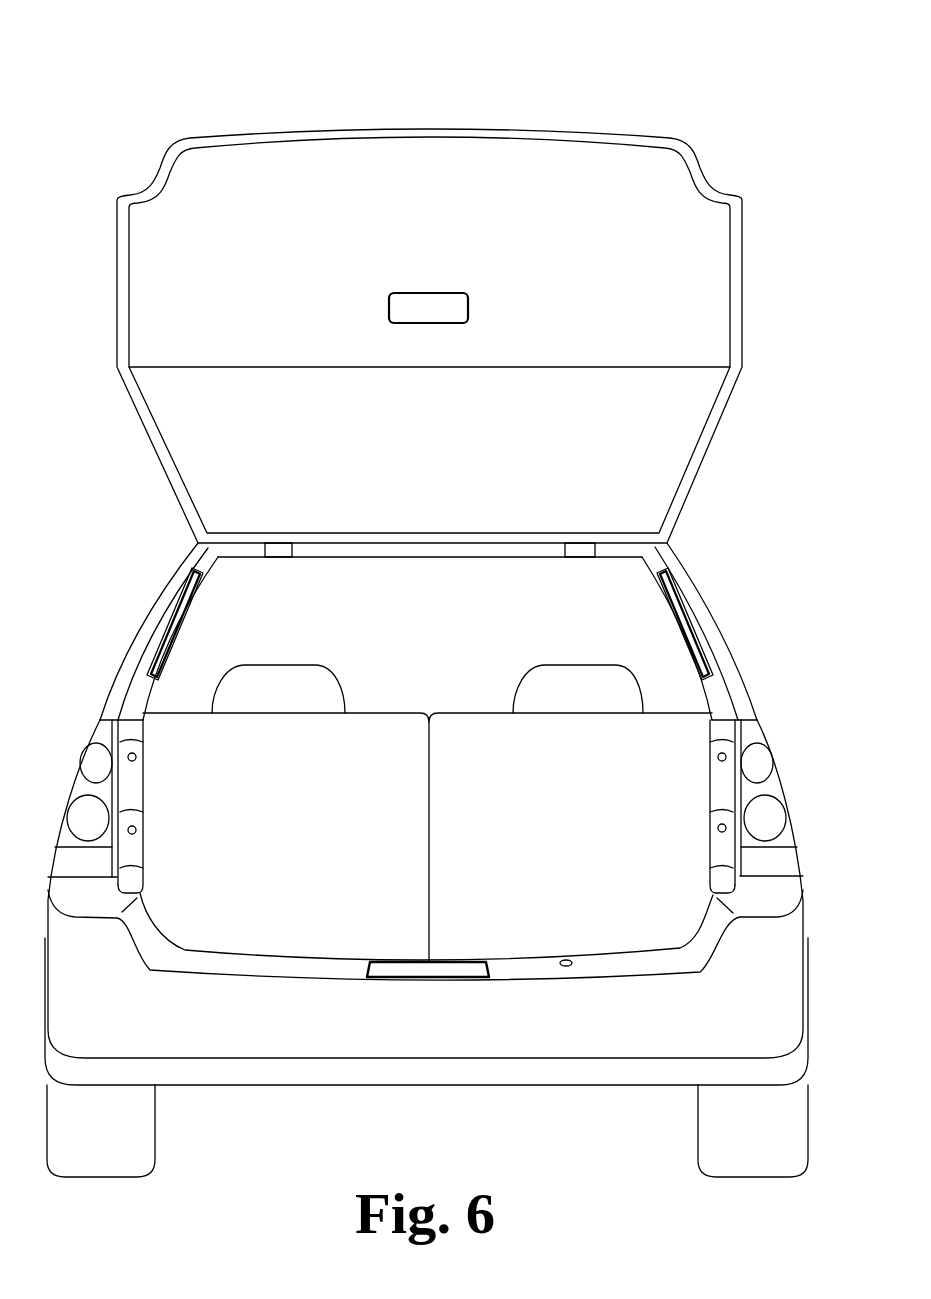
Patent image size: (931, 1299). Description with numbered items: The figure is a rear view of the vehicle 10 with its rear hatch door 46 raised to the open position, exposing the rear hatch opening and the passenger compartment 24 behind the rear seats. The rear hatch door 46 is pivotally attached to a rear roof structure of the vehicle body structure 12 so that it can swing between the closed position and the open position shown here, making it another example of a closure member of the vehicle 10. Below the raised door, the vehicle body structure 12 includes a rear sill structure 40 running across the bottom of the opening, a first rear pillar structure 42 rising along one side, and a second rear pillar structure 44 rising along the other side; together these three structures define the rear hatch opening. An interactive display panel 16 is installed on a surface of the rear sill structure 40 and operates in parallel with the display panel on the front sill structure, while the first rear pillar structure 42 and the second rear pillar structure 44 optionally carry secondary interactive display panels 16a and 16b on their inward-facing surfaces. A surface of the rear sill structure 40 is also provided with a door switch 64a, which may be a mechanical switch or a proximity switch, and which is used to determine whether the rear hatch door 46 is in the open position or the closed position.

The vehicle 10 is at (407, 72).
The vehicle body structure 12 is at (752, 688).
The interactive display panel 16 is at (445, 968).
The secondary interactive display panel 16a is at (174, 626).
The secondary interactive display panel 16b is at (697, 648).
The passenger compartment 24 is at (622, 575).
The rear sill structure 40 is at (288, 972).
The first rear pillar structure 42 is at (158, 612).
The second rear pillar structure 44 is at (716, 643).
The rear hatch door 46 is at (697, 306).
The door switch 64a is at (567, 960).